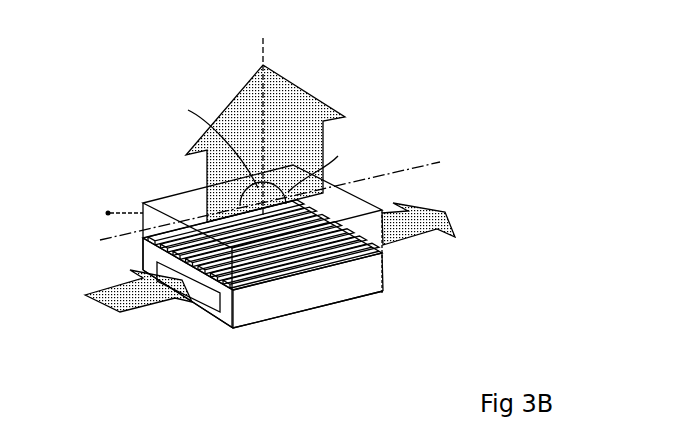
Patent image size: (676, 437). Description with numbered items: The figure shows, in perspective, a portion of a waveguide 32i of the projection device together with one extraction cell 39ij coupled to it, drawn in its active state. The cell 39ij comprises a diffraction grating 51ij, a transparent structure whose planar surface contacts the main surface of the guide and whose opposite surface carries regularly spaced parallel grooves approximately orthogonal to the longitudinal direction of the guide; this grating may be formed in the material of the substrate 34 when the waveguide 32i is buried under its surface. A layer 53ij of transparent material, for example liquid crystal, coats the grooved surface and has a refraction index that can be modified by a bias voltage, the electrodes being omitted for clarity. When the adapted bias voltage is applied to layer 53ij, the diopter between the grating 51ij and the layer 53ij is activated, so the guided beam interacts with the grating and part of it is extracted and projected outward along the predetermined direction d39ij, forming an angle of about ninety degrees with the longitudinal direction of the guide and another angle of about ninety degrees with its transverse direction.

The extraction cell 39ij is at (472, 289).
The layer 53ij is at (338, 254).
The diffraction grating 51ij is at (338, 258).
The waveguide 32i is at (210, 298).
The substrate 34 is at (258, 305).
The predetermined direction d39ij is at (263, 44).